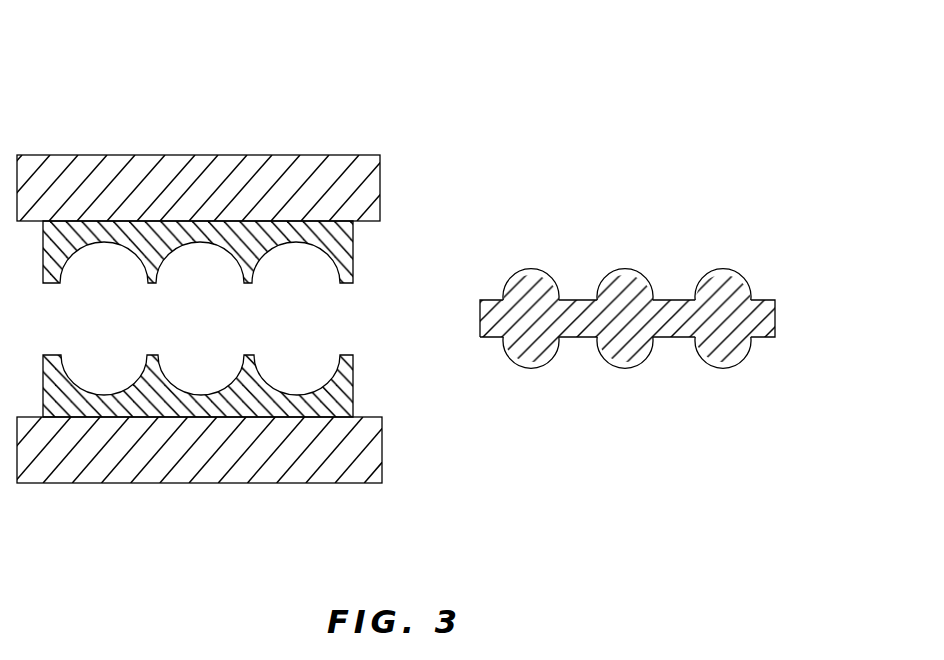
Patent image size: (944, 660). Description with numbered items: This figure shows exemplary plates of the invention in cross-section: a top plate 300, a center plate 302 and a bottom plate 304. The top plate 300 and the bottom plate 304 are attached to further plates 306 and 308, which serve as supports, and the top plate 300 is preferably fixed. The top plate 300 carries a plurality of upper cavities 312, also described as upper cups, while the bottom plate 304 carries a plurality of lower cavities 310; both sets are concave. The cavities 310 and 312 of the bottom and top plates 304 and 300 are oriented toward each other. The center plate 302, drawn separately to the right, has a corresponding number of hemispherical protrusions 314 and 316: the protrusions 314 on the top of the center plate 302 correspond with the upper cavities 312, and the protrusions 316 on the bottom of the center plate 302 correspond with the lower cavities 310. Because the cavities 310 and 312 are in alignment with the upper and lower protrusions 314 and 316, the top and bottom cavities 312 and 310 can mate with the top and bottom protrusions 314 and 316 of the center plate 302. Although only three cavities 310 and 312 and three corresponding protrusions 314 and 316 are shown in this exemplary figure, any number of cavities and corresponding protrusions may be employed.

The top plate 300 is at (355, 248).
The center plate 302 is at (775, 318).
The bottom plate 304 is at (353, 387).
The plate 306 is at (252, 127).
The plate 308 is at (193, 512).
The lower cavities 310 is at (107, 378).
The upper cavities 312 is at (297, 268).
The protrusions 314 is at (723, 273).
The protrusions 316 is at (530, 363).